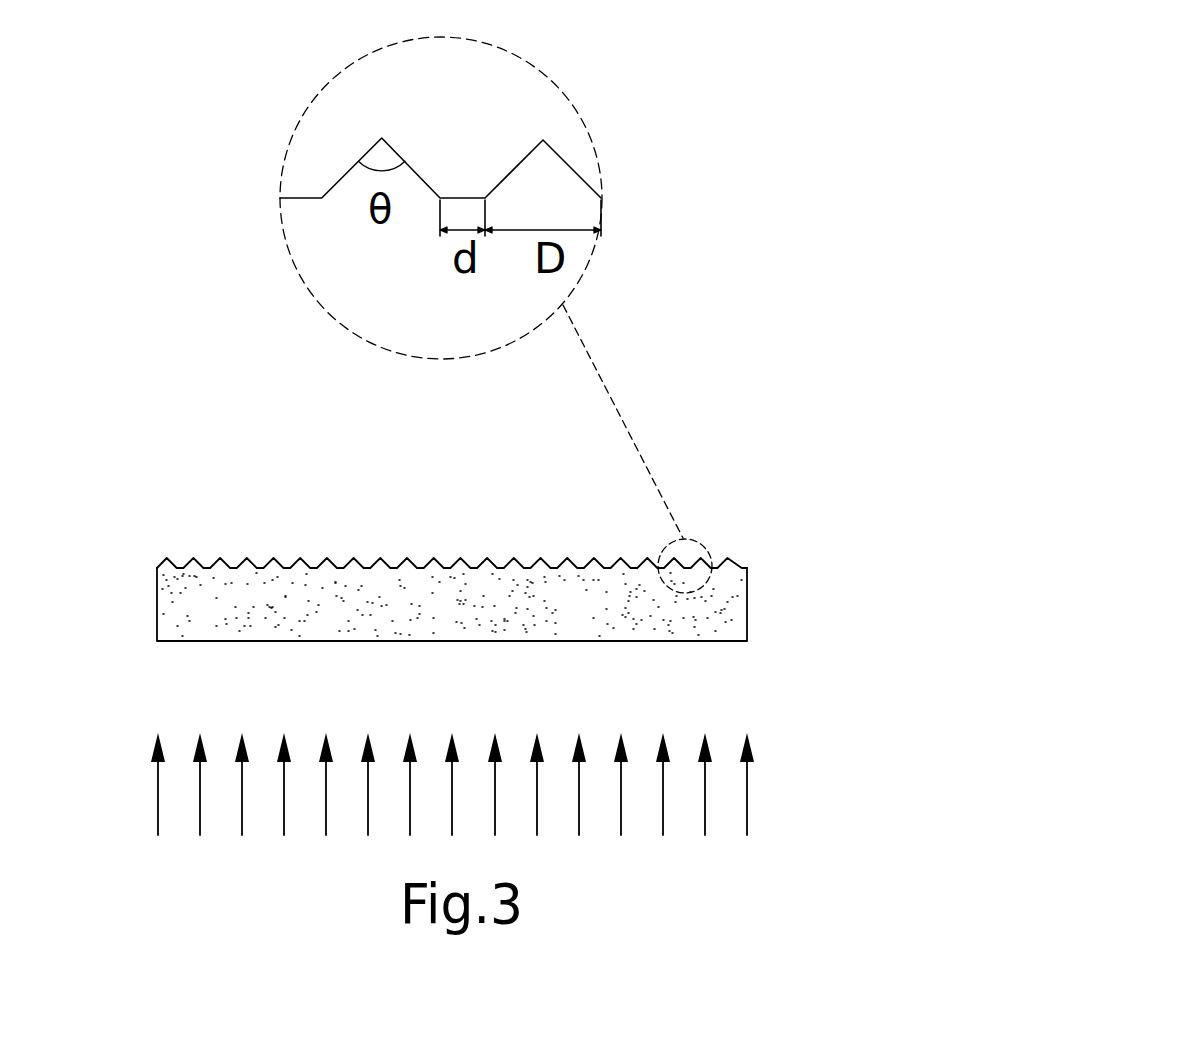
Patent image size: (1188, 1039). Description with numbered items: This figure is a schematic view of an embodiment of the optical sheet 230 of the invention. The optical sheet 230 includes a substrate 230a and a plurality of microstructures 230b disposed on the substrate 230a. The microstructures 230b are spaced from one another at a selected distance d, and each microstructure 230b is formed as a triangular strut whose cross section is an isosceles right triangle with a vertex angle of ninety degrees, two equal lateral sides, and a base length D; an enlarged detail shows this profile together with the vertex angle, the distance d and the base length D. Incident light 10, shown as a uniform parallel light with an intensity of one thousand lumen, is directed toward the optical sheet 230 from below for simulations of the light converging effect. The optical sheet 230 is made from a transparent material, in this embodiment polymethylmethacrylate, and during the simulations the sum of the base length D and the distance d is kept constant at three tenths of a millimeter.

The optical sheet 230 is at (672, 512).
The substrate 230a is at (735, 620).
The microstructures 230b is at (730, 557).
The incident light 10 is at (800, 780).